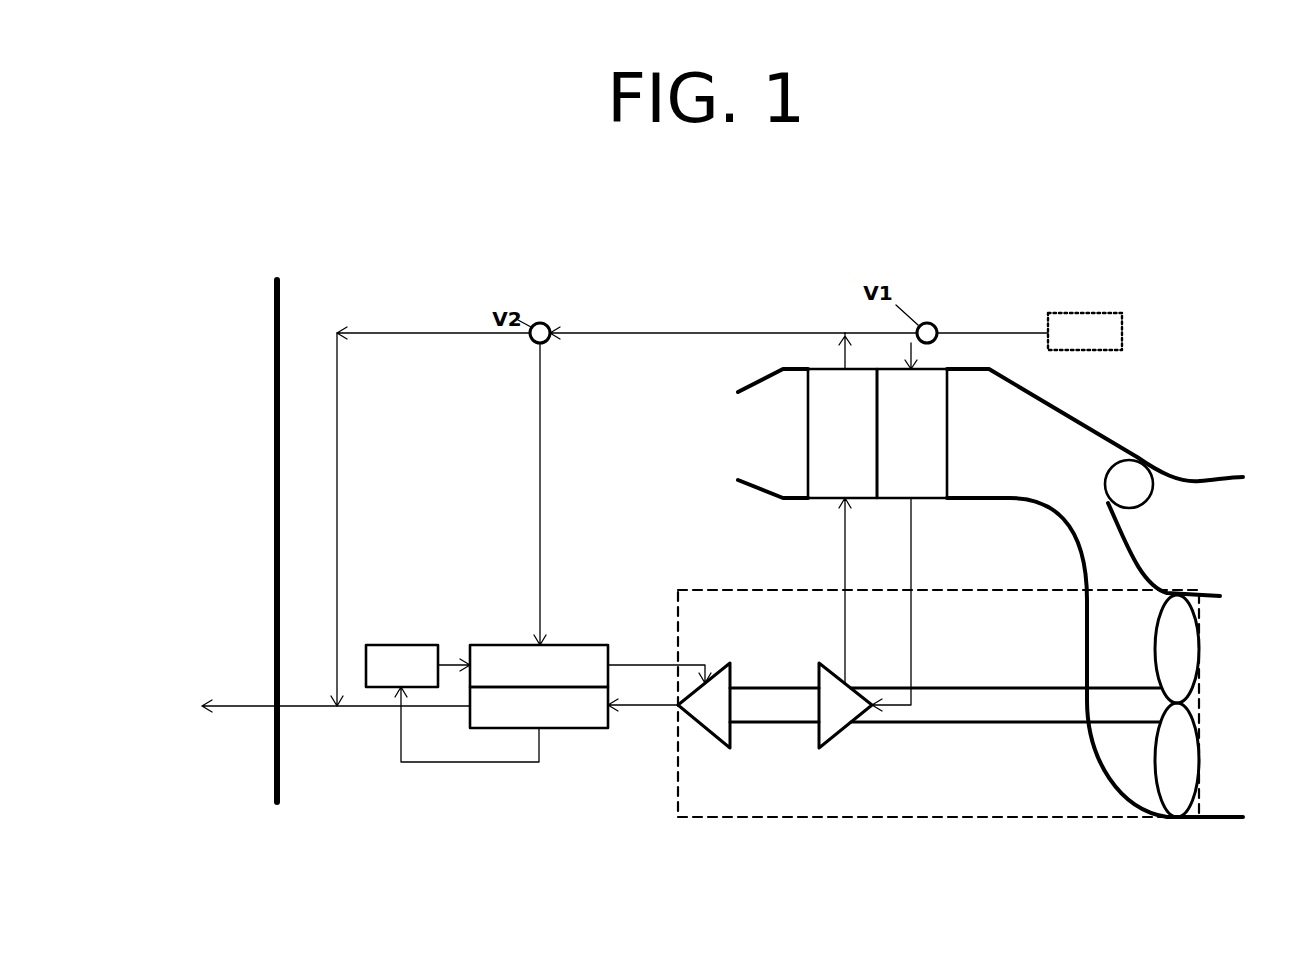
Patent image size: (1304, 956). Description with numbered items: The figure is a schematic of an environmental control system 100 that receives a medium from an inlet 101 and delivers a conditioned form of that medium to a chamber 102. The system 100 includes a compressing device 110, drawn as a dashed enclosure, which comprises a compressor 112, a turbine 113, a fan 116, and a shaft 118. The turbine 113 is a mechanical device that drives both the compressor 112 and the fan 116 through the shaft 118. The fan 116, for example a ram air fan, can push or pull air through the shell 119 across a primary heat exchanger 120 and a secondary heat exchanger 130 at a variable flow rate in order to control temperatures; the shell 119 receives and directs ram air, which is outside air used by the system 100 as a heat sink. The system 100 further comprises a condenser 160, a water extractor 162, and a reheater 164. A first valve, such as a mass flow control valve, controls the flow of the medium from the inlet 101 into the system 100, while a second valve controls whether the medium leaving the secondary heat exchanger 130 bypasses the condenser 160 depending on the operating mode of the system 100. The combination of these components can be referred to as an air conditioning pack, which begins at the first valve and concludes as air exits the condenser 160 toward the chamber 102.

The system 100 is at (1120, 165).
The inlet 101 is at (1085, 331).
The chamber 102 is at (275, 280).
The compressing device 110 is at (763, 818).
The compressor 112 is at (824, 717).
The turbine 113 is at (697, 717).
The fan 116 is at (1137, 755).
The shaft 118 is at (1033, 724).
The shell 119 is at (1128, 457).
The primary heat exchanger 120 is at (896, 447).
The secondary heat exchanger 130 is at (826, 447).
The condenser 160 is at (522, 719).
The water extractor 162 is at (385, 678).
The reheater 164 is at (522, 678).